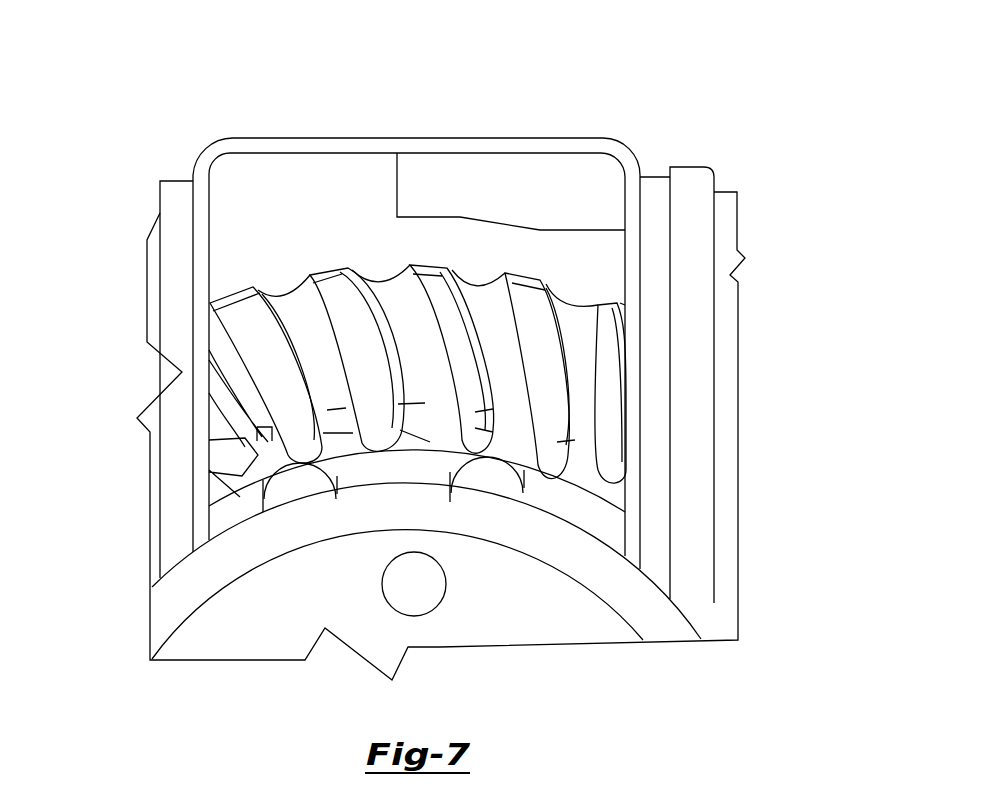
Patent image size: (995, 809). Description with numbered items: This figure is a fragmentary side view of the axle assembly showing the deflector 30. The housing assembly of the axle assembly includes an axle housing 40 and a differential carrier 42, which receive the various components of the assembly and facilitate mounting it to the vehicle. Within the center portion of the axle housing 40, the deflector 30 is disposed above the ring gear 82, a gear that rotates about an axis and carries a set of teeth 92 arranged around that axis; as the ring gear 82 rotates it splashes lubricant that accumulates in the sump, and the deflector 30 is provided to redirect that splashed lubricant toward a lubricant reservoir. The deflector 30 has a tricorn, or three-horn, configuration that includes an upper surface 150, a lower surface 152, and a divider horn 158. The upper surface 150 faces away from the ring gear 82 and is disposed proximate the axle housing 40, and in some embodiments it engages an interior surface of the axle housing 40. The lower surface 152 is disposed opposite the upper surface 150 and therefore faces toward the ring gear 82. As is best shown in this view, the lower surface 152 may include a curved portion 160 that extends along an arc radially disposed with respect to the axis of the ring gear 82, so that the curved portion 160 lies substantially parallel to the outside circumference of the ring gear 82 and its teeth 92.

The deflector 30 is at (416, 308).
The axle housing 40 is at (233, 137).
The differential carrier 42 is at (708, 167).
The ring gear 82 is at (349, 356).
The teeth 92 is at (236, 290).
The upper surface 150 is at (473, 156).
The lower surface 152 is at (593, 231).
The divider horn 158 is at (485, 185).
The curved portion 160 is at (460, 224).